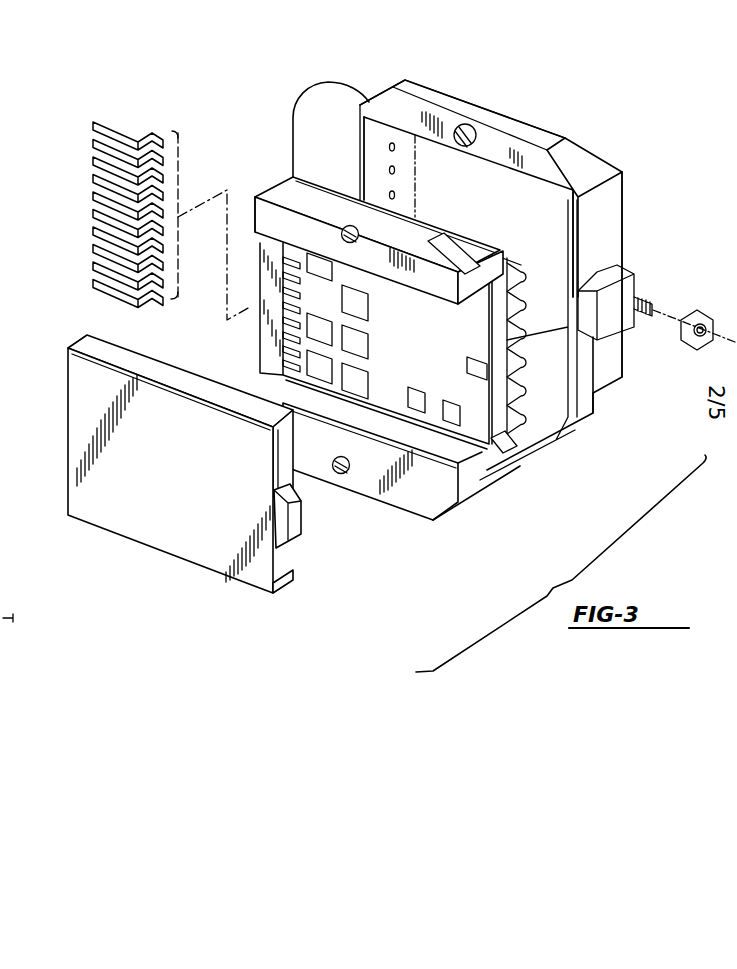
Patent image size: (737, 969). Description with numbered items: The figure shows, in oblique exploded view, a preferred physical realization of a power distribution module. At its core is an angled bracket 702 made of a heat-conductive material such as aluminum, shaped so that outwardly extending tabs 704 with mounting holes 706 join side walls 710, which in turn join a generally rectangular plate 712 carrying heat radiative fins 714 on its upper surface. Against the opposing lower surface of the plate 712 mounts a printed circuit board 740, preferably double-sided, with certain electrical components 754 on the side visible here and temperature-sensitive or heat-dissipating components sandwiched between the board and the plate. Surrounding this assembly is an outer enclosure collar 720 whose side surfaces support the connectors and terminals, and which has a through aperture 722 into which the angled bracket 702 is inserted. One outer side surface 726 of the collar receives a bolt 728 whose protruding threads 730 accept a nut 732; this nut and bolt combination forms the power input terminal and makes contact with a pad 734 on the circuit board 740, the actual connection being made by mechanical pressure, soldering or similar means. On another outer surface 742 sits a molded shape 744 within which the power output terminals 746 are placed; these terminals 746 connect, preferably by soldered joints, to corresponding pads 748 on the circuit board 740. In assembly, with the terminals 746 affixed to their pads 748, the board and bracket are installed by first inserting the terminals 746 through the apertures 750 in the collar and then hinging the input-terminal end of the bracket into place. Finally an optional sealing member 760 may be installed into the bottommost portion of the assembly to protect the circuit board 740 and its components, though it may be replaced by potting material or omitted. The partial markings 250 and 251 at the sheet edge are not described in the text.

The bracket 702 is at (277, 160).
The outwardly extending tabs 704 is at (267, 210).
The mounting holes 706 is at (341, 236).
The side walls 710 is at (477, 269).
The plate 712 is at (520, 418).
The fins 714 is at (530, 358).
The outer enclosure collar 720 is at (566, 118).
The through aperture 722 is at (378, 147).
The outer side surface 726 is at (611, 202).
The bolt 728 is at (577, 307).
The protruding threads 730 is at (636, 290).
The nut 732 is at (680, 342).
The pad 734 is at (468, 362).
The printed circuit board 740 is at (460, 427).
The outer surface 742 is at (377, 92).
The molded shape 744 is at (304, 111).
The power output terminals 746 is at (80, 198).
The pads 748 is at (281, 298).
The apertures 750 is at (400, 194).
The electrical components 754 is at (327, 364).
The sealing member 760 is at (203, 501).
The partial label 250 is at (19, 564).
The partial label 251 is at (19, 666).